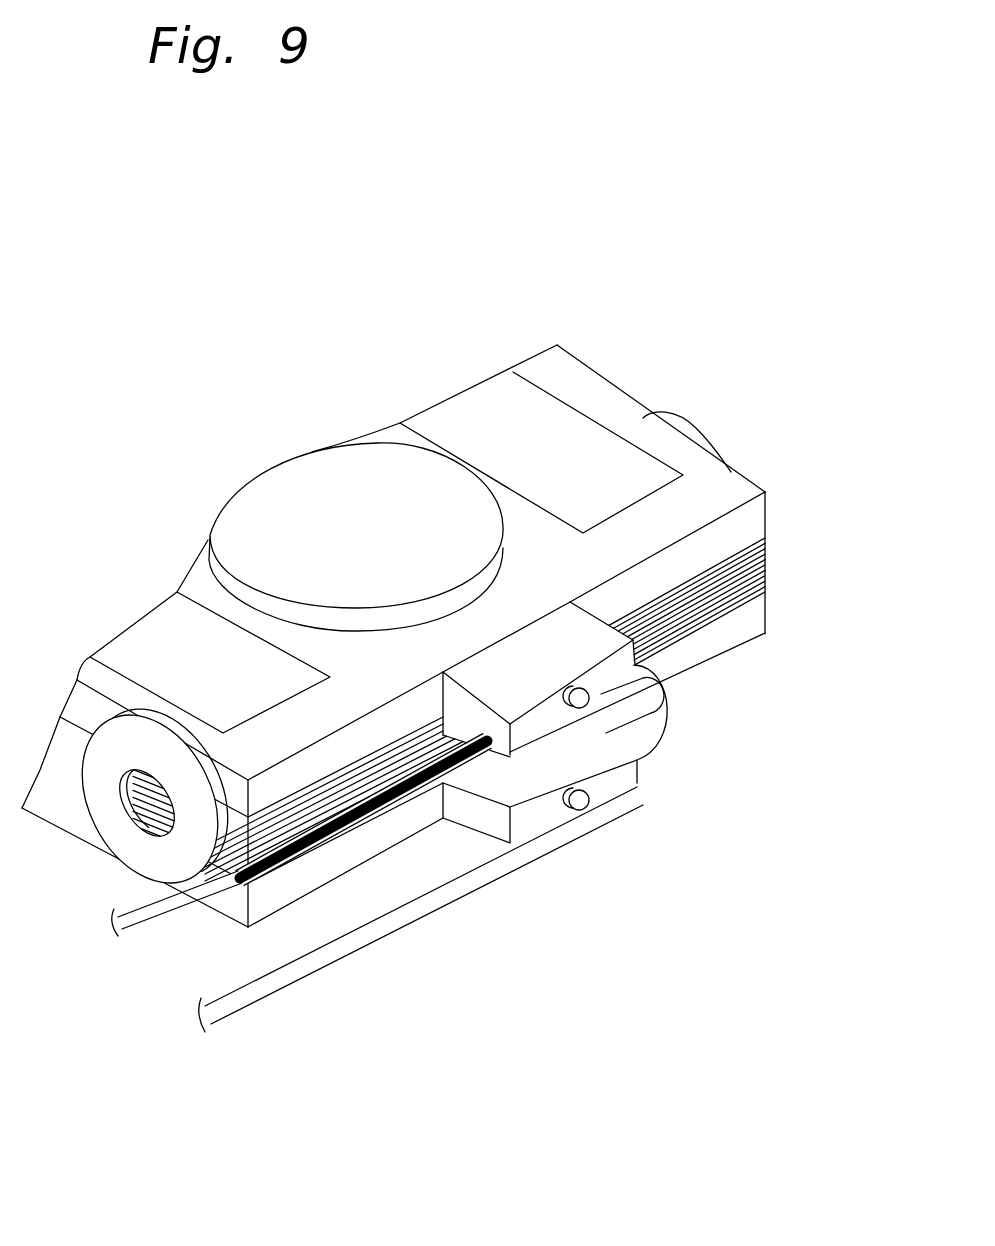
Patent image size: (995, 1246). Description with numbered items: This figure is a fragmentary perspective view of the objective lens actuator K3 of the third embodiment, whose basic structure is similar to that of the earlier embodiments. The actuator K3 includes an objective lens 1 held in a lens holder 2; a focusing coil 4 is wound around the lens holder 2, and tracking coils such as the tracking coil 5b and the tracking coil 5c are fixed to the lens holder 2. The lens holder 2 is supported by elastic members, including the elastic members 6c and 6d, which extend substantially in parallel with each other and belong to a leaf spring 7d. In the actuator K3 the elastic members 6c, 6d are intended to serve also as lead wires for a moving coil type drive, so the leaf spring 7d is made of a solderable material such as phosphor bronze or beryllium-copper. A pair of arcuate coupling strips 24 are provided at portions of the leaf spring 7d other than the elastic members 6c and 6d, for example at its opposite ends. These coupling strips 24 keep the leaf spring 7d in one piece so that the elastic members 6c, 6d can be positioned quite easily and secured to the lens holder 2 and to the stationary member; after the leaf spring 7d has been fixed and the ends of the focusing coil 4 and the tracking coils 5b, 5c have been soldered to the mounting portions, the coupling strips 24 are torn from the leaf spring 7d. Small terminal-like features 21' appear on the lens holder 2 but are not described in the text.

The objective lens 1 is at (380, 490).
The lens holder 2 is at (733, 480).
The focusing coil 4 is at (766, 567).
The tracking coil 5b is at (685, 435).
The tracking coil 5c is at (108, 813).
The elastic member 6c is at (220, 879).
The elastic member 6d is at (427, 895).
The leaf spring 7d is at (548, 813).
The terminal pins 21' is at (649, 769).
The arcuate coupling strip 24 is at (668, 703).
The objective lens actuator K3 is at (668, 247).